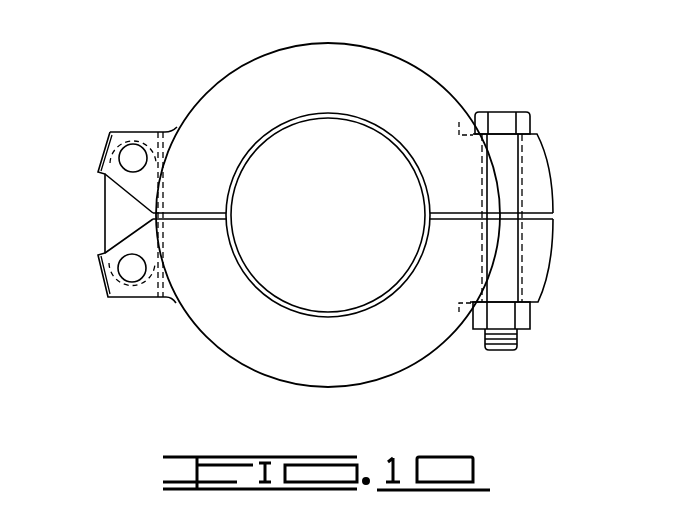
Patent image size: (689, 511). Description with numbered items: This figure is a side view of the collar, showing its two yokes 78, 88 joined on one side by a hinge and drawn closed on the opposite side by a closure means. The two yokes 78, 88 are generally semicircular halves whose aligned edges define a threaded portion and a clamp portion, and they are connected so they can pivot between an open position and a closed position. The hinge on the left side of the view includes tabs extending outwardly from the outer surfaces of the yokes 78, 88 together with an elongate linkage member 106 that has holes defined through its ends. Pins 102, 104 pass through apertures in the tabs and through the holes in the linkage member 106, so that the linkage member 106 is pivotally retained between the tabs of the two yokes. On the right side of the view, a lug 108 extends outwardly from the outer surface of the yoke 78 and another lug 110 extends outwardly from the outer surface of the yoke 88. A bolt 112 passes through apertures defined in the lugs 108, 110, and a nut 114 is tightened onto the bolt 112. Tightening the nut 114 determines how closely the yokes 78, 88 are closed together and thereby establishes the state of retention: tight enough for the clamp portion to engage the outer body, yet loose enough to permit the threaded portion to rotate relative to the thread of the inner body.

The yoke 78 is at (356, 38).
The yoke 88 is at (226, 365).
The pin 102 is at (133, 158).
The pin 104 is at (132, 268).
The linkage member 106 is at (117, 213).
The lug 108 is at (533, 165).
The lug 110 is at (533, 262).
The bolt 112 is at (502, 120).
The nut 114 is at (520, 318).